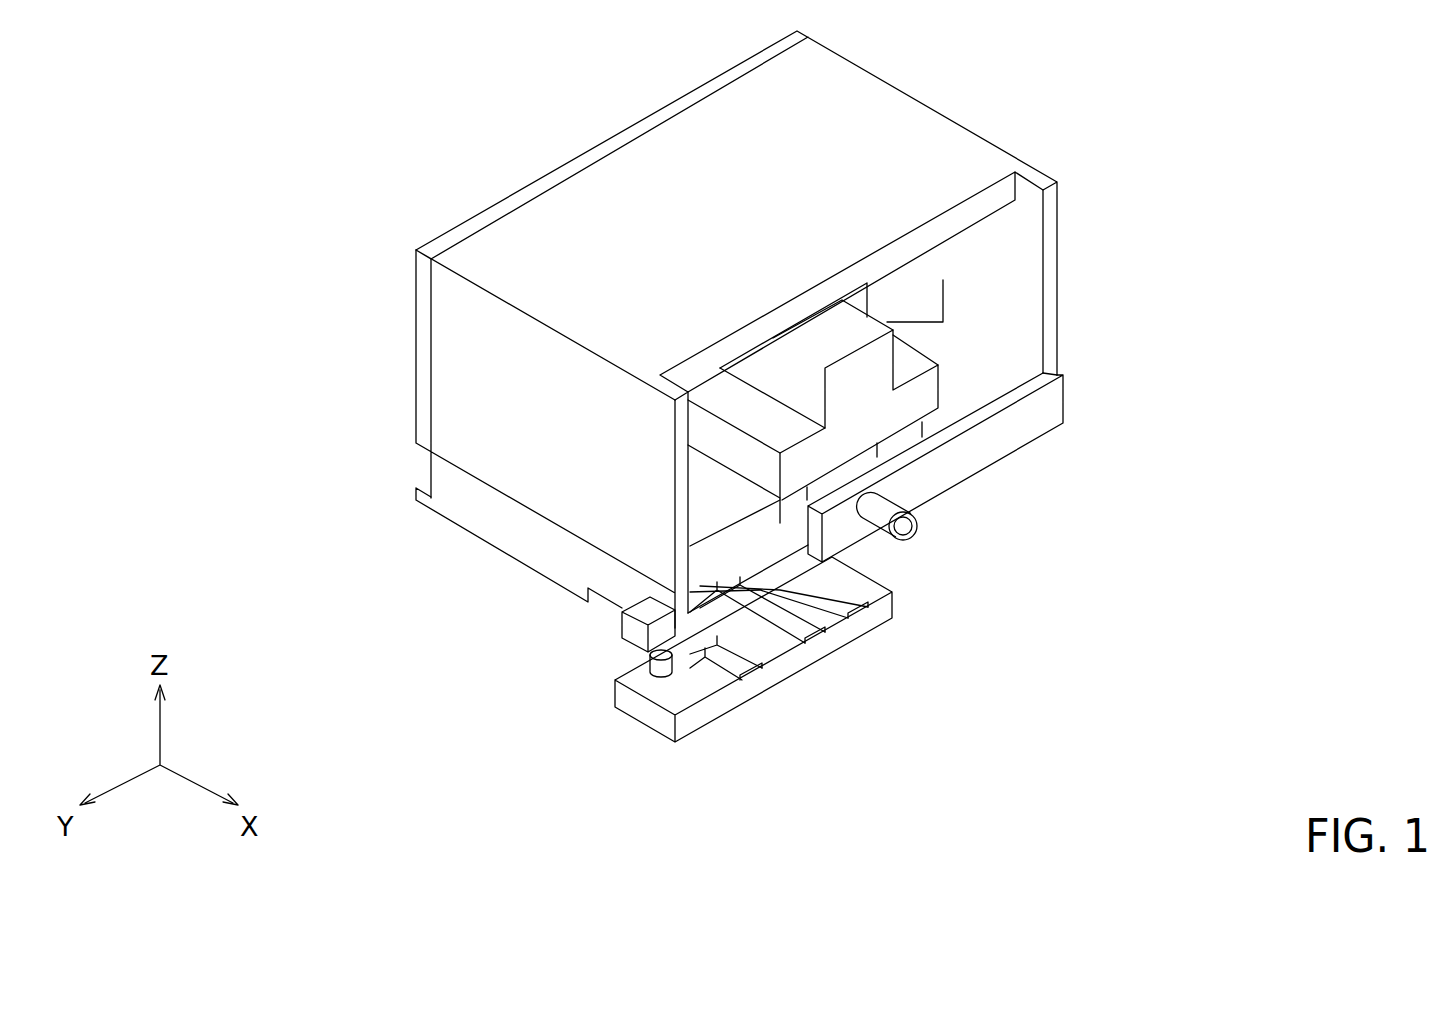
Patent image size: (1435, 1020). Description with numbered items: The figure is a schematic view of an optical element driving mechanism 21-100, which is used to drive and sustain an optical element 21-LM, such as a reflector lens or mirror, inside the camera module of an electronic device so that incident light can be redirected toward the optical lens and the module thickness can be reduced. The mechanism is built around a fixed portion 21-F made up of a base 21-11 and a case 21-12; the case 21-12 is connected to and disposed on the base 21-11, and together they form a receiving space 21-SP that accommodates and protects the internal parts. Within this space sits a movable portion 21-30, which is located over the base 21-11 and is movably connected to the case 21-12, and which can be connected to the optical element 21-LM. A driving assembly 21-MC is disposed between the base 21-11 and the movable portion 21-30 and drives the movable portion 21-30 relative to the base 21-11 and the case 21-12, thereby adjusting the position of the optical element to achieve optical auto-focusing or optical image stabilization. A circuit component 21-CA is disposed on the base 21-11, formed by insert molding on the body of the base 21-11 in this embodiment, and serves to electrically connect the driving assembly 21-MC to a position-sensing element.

The optical element driving mechanism 21-100 is at (405, 53).
The optical element 21-LM is at (418, 300).
The fixed portion 21-F is at (285, 318).
The case 21-12 is at (475, 390).
The base 21-11 is at (470, 502).
The receiving space 21-SP is at (1034, 277).
The movable portion 21-30 is at (880, 410).
The driving assembly 21-MC is at (835, 478).
The circuit component 21-CA is at (698, 690).